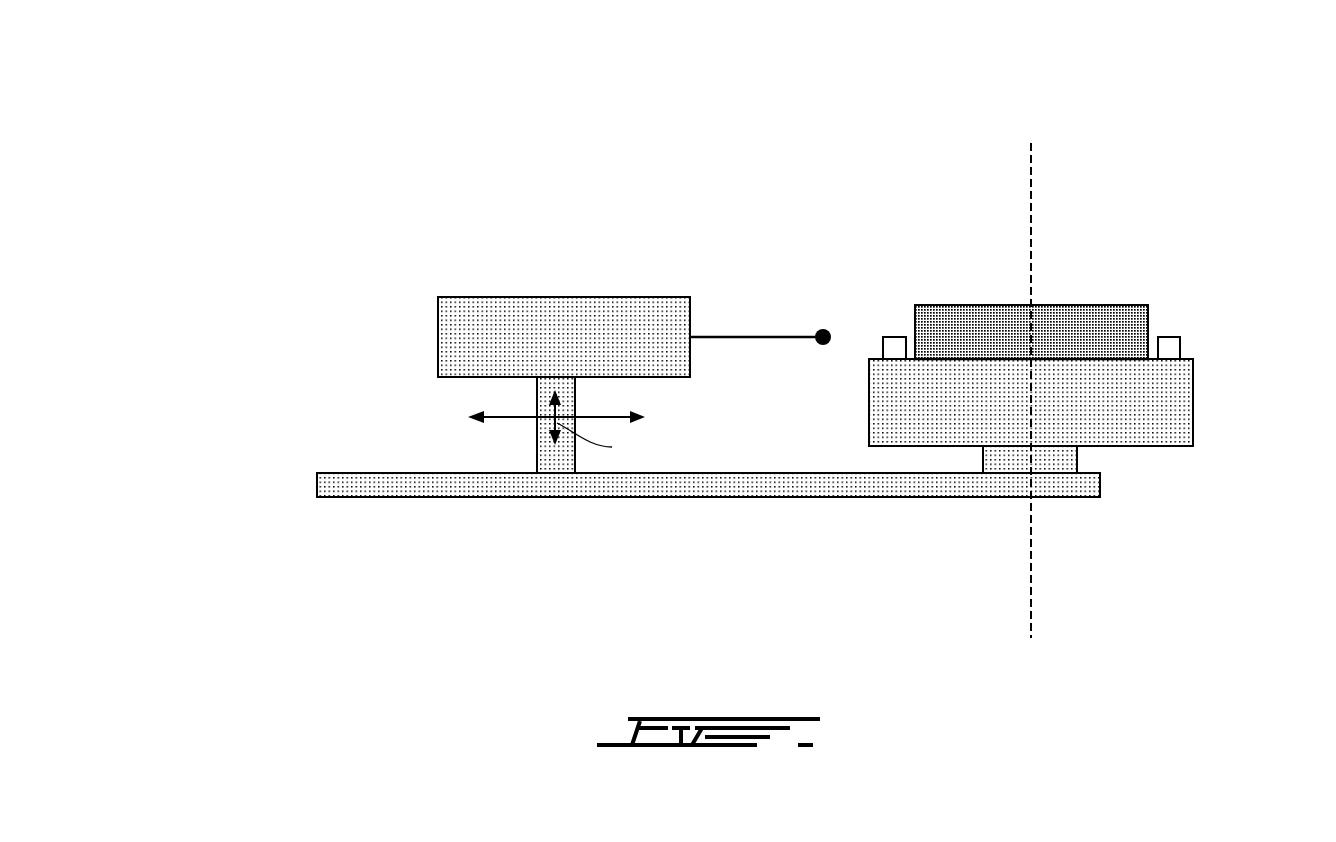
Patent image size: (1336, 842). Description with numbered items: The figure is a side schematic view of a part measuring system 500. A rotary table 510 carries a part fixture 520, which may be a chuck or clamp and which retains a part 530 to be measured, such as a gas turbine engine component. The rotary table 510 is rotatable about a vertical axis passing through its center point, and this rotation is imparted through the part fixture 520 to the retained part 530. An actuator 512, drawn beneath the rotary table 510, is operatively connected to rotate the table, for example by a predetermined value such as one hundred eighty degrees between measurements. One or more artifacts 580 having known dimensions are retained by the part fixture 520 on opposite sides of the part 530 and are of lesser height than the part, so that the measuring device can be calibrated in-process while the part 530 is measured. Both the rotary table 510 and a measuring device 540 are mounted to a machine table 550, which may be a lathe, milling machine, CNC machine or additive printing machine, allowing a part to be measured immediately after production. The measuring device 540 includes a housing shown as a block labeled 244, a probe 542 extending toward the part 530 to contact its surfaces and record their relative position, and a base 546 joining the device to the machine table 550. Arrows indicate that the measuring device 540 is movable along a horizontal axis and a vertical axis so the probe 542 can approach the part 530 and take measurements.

The part measuring system 500 is at (316, 163).
The measuring device 540 is at (404, 300).
The probe head 244 is at (547, 322).
The probe 542 is at (782, 335).
The base 546 is at (537, 398).
The machine table 550 is at (338, 487).
The rotary table 510 is at (1175, 430).
The actuator 512 is at (1080, 455).
The part fixture 520 is at (1107, 360).
The part 530 is at (1088, 330).
The artifact 580 is at (893, 345).